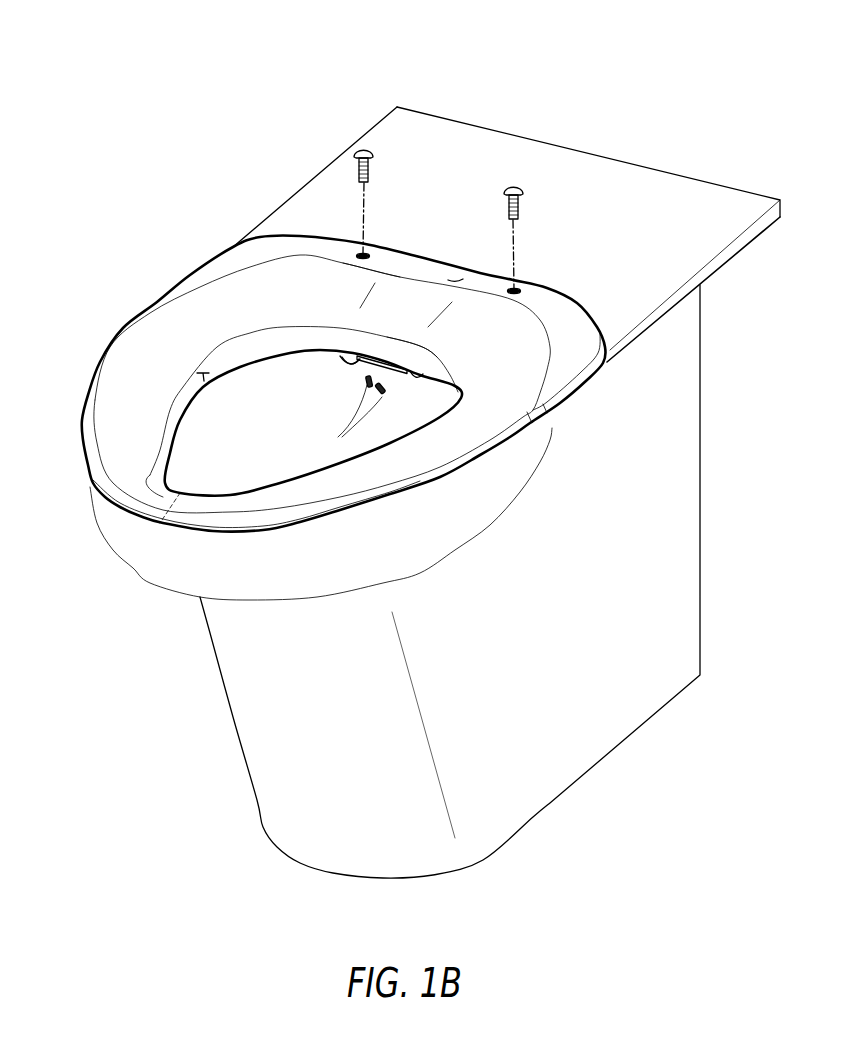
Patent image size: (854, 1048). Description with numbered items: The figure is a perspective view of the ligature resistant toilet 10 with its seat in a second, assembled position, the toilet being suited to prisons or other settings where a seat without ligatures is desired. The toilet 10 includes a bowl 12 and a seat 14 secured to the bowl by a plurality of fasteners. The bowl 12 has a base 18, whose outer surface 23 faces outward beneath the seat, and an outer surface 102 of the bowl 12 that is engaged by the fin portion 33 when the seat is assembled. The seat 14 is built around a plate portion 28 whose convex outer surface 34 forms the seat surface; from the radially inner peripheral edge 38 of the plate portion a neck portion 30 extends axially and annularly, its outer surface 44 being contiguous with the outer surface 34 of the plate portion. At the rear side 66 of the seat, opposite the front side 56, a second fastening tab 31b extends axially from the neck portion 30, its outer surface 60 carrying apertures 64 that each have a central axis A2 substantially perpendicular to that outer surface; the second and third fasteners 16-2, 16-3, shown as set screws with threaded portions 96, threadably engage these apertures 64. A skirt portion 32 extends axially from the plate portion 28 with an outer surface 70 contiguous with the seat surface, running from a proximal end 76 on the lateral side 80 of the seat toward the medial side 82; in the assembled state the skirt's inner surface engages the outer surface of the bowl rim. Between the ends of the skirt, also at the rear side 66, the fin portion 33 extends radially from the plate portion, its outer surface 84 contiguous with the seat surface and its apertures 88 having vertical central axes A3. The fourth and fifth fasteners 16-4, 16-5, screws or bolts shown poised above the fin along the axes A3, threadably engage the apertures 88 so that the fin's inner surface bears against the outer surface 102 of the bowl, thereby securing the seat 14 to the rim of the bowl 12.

The ligature resistant toilet 10 is at (628, 80).
The bowl 12 is at (365, 581).
The seat 14 is at (351, 338).
The second fastener 16-2 is at (363, 381).
The third fastener 16-3 is at (386, 395).
The fourth fastener 16-4 is at (354, 171).
The fifth fastener 16-5 is at (525, 208).
The base 18 is at (103, 505).
The outer surface 23 is at (99, 538).
The plate portion 28 is at (160, 323).
The neck portion 30 is at (228, 360).
The second fastening tab 31b is at (425, 357).
The skirt portion 32 is at (470, 471).
The fin portion 33 is at (417, 270).
The outer surface 34 is at (160, 380).
The radially inner peripheral edge 38 is at (267, 328).
The outer surface 44 is at (205, 381).
The front side 56 is at (163, 497).
The outer surface 60 is at (342, 357).
The aperture 64 is at (401, 363).
The rear side 66 is at (565, 317).
The outer surface 70 is at (543, 410).
The proximal end 76 is at (607, 355).
The lateral side 80 is at (580, 386).
The medial side 82 is at (180, 277).
The outer surface 84 is at (457, 277).
The aperture 88 is at (362, 252).
The threaded portion 96 is at (346, 420).
The outer surface 102 is at (662, 241).
The central axis A2 is at (360, 367).
The central axis A3 is at (368, 212).